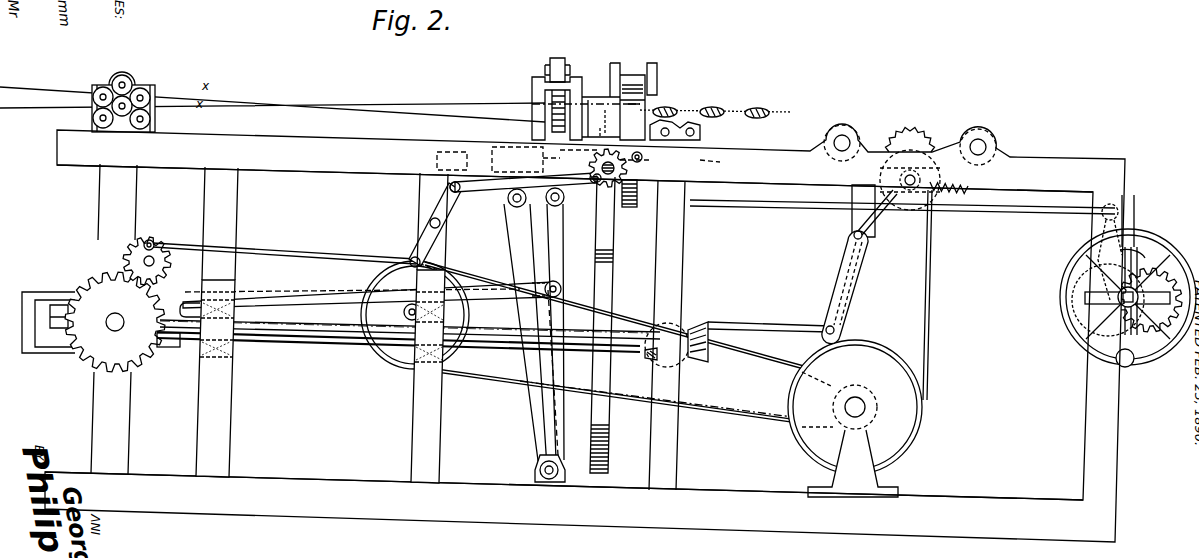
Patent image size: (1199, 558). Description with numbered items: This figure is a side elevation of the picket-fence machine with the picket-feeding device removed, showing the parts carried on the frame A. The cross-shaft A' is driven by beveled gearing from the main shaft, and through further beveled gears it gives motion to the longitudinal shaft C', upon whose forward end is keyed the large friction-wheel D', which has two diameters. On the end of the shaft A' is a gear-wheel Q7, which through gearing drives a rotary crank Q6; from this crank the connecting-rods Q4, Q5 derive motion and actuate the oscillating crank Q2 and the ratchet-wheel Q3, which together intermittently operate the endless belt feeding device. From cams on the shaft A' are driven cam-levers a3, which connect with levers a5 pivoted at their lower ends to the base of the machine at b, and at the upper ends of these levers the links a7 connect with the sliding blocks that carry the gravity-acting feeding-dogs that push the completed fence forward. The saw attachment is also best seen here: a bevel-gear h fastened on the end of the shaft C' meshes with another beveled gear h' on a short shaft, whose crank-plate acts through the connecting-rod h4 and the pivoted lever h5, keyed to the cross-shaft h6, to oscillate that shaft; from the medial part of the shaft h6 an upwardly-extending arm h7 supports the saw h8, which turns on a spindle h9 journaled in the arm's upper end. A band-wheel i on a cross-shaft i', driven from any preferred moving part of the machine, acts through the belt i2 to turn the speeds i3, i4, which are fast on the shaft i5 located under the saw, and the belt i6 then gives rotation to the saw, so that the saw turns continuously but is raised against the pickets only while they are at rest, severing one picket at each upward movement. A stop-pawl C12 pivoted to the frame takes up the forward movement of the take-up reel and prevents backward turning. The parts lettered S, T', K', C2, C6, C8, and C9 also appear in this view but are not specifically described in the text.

The frame A is at (585, 333).
The cross-shaft A' is at (383, 326).
The cam-levers a3 is at (35, 288).
The levers a5 is at (534, 336).
The links a7 is at (547, 202).
The pivot b is at (532, 472).
The set screw S is at (557, 60).
The tension bracket T' is at (616, 94).
The oscillating crank Q2 is at (440, 227).
The ratchet-wheel Q3 is at (592, 160).
The connecting-rod Q4 is at (525, 192).
The connecting-rod Q5 is at (280, 251).
The rotary crank Q6 is at (158, 261).
The gear-wheel Q7 is at (115, 322).
The rack K' is at (638, 199).
The friction-wheel D' is at (616, 325).
The longitudinal shaft C' is at (398, 326).
The drive wheel C2 is at (1066, 312).
The rod C6 is at (980, 212).
The pinion C8 is at (1128, 255).
The gear C9 is at (1150, 300).
The stop-pawl C12 is at (1135, 364).
The band-wheel i is at (415, 323).
The cross-shaft i' is at (396, 313).
The belt i2 is at (635, 346).
The speed i3 is at (880, 408).
The speed i4 is at (855, 418).
The shaft i5 is at (842, 405).
The belt i6 is at (935, 295).
The bevel-gear h is at (442, 346).
The beveled gear h' is at (679, 337).
The connecting-rod h4 is at (769, 316).
The pivoted lever h5 is at (848, 264).
The cross-shaft h6 is at (862, 237).
The upwardly-extending arm h7 is at (885, 210).
The saw h8 is at (953, 196).
The spindle h9 is at (920, 178).